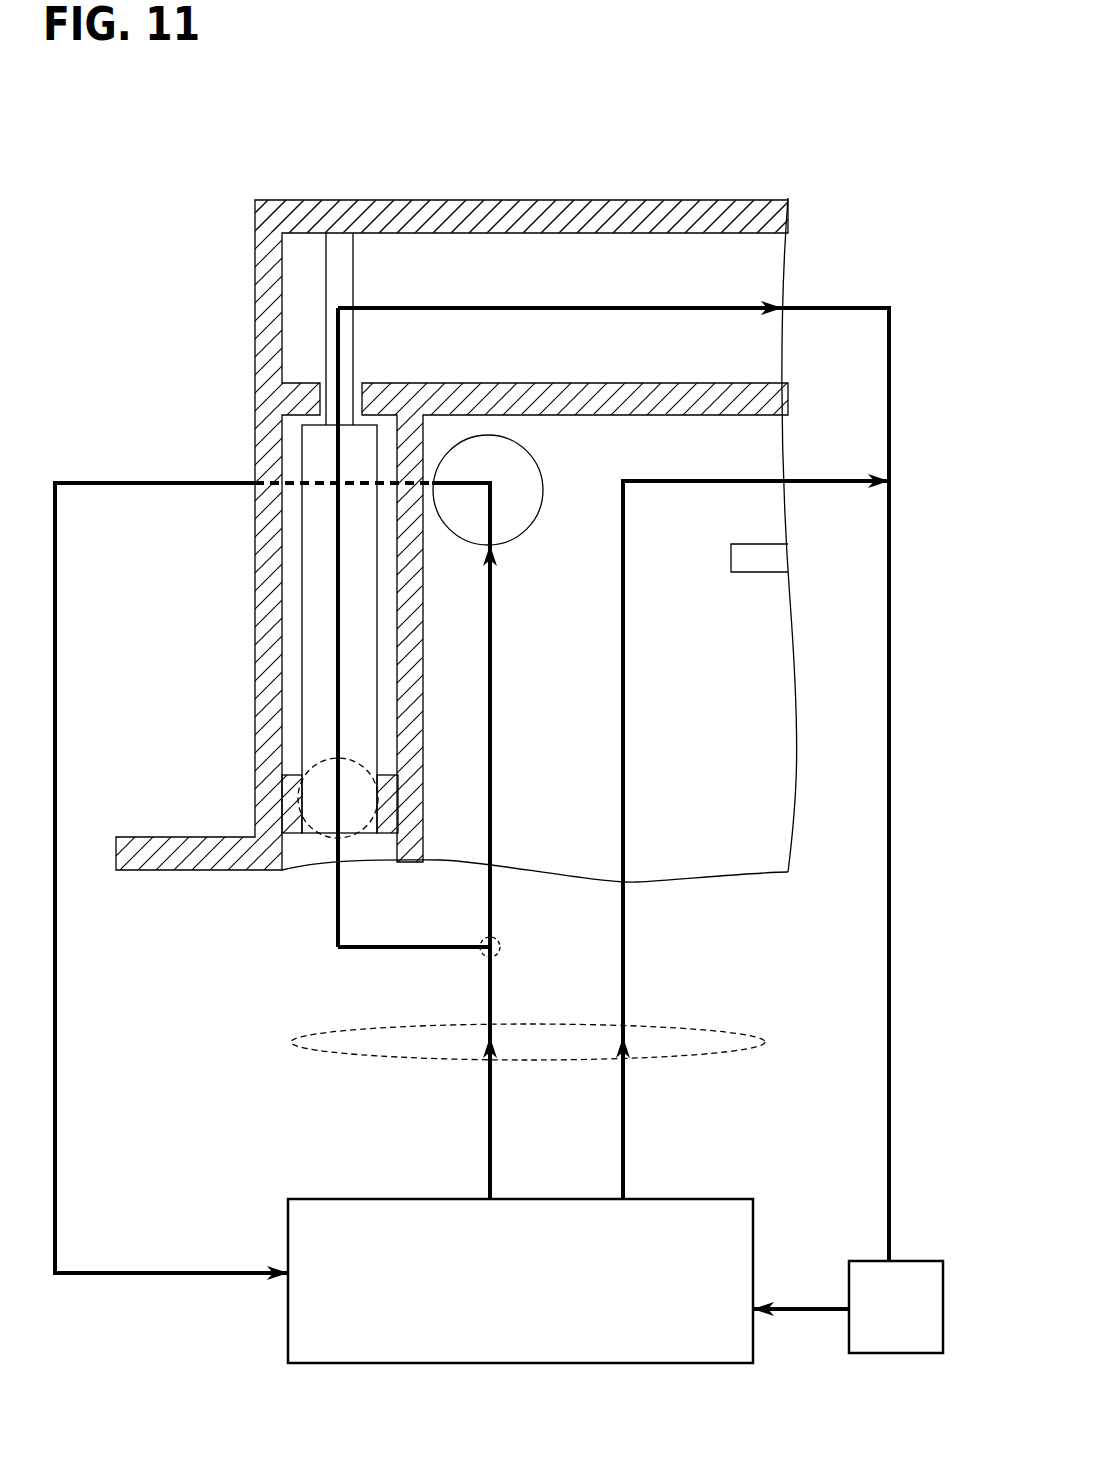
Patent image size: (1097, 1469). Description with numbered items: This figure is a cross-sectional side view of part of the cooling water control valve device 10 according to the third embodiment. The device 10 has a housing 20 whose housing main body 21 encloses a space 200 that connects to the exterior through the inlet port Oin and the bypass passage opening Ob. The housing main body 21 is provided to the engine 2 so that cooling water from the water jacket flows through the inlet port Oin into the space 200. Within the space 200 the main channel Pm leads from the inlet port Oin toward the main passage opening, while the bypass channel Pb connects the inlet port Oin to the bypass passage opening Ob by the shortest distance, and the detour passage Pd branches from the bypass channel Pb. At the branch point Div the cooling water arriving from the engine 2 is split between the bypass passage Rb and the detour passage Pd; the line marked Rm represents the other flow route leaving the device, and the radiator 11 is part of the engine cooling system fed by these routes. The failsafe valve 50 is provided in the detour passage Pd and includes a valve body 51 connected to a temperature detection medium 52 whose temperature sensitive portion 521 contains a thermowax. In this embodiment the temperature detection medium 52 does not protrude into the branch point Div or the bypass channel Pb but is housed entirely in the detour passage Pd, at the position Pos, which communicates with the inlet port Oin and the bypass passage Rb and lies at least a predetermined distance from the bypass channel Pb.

The cooling water control valve device 10 is at (456, 529).
The housing 20 is at (452, 497).
The housing main body 21 is at (480, 209).
The failsafe valve 50 is at (270, 620).
The valve body 51 is at (323, 435).
The temperature detection medium 52 is at (272, 792).
The temperature sensitive portion 521 is at (318, 819).
The space 200 is at (730, 843).
The engine 2 is at (737, 1208).
The radiator 11 is at (920, 1276).
The detour passage Pd is at (335, 605).
The bypass channel Pb is at (493, 750).
The main channel Pm is at (627, 737).
The bypass passage Rb is at (58, 970).
The main return line Rm is at (892, 702).
The bypass passage opening Ob is at (522, 482).
The inlet port Oin is at (543, 1062).
The position Pos is at (330, 840).
The branch point Div is at (478, 958).